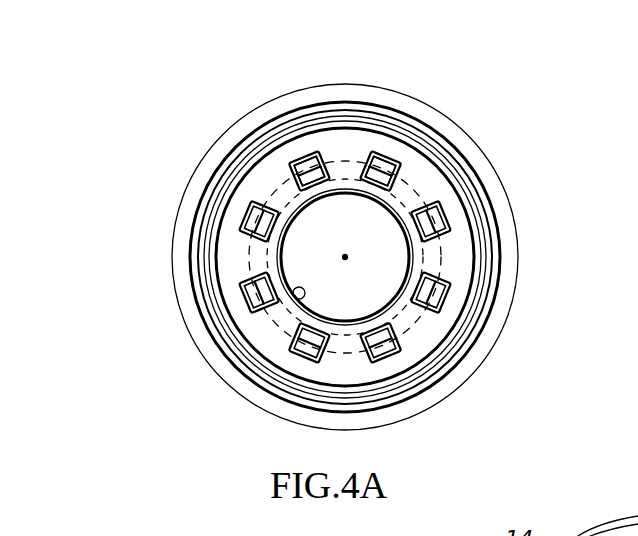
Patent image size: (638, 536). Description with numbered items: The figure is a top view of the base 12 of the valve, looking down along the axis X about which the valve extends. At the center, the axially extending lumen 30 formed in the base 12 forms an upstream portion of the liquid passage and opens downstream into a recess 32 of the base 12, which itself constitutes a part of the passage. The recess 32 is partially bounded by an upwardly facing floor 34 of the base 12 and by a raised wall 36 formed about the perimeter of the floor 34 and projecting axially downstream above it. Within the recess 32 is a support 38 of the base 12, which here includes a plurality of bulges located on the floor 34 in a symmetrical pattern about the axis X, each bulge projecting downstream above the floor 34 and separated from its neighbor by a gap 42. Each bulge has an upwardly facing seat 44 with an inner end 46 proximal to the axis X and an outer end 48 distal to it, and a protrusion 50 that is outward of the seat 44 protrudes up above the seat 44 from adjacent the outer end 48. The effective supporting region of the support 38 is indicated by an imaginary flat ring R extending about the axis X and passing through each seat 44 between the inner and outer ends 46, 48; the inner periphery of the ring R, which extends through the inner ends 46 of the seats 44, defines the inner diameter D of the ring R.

The base 12 is at (128, 202).
The lumen 30 is at (293, 297).
The recess 32 is at (422, 343).
The floor 34 is at (232, 257).
The raised wall 36 is at (227, 175).
The support 38 is at (462, 214).
The gap 42 is at (463, 262).
The seat 44 is at (266, 145).
The inner end 46 is at (375, 120).
The outer end 48 is at (318, 150).
The protrusion 50 is at (298, 152).
The imaginary flat ring R is at (385, 163).
The inner diameter D is at (303, 213).
The axis X is at (348, 257).